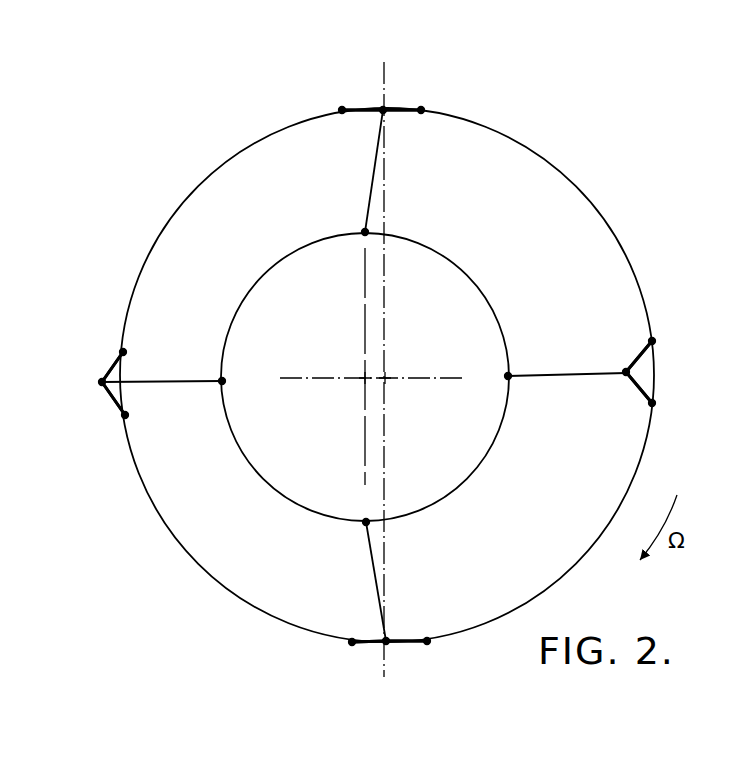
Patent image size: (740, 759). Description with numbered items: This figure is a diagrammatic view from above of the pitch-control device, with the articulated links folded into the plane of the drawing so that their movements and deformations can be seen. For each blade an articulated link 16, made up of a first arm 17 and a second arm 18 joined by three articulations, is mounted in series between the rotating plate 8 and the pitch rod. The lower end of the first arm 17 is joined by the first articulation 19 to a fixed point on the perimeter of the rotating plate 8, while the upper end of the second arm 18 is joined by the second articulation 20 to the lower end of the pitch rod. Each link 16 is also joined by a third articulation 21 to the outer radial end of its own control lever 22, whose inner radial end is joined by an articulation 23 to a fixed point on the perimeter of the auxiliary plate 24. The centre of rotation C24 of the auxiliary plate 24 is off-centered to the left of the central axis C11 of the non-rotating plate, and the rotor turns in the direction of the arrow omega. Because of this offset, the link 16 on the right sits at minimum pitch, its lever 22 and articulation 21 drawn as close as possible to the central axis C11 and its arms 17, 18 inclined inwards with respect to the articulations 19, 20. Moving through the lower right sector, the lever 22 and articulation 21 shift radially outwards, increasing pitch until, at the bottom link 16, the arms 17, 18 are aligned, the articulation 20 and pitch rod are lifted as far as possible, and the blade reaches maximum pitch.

The rotating plate 8 is at (185, 203).
The articulated link 16 is at (368, 97).
The first arm 17 is at (400, 112).
The second arm 18 is at (365, 112).
The first articulation 19 is at (421, 110).
The second articulation 20 is at (342, 110).
The third articulation 21 is at (383, 110).
The control lever 22 is at (376, 164).
The articulation 23 is at (365, 235).
The auxiliary plate 24 is at (275, 265).
The central axis C11 is at (388, 376).
The centre of rotation C24 is at (363, 380).